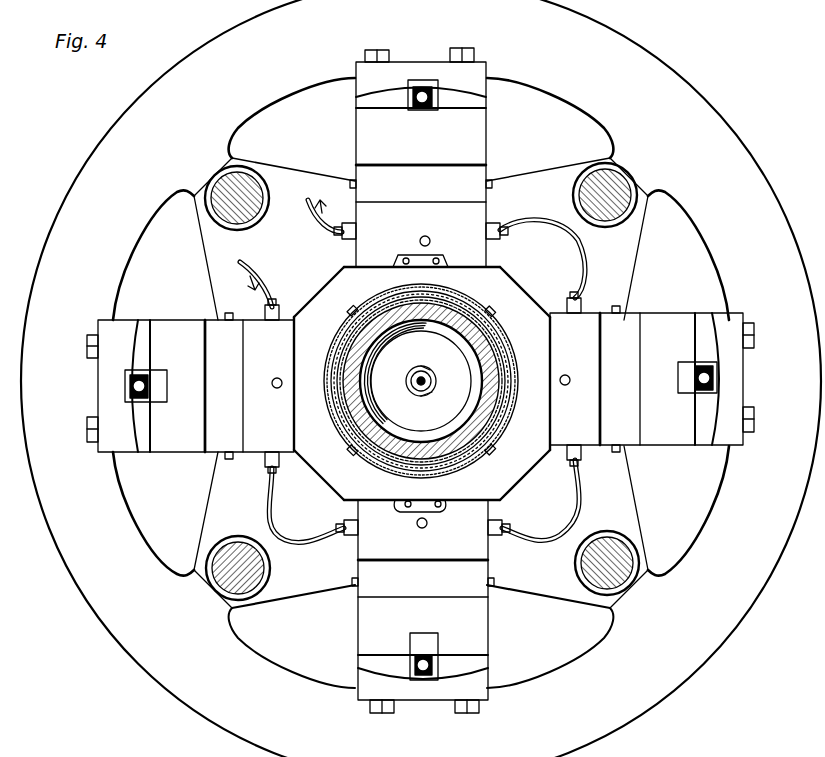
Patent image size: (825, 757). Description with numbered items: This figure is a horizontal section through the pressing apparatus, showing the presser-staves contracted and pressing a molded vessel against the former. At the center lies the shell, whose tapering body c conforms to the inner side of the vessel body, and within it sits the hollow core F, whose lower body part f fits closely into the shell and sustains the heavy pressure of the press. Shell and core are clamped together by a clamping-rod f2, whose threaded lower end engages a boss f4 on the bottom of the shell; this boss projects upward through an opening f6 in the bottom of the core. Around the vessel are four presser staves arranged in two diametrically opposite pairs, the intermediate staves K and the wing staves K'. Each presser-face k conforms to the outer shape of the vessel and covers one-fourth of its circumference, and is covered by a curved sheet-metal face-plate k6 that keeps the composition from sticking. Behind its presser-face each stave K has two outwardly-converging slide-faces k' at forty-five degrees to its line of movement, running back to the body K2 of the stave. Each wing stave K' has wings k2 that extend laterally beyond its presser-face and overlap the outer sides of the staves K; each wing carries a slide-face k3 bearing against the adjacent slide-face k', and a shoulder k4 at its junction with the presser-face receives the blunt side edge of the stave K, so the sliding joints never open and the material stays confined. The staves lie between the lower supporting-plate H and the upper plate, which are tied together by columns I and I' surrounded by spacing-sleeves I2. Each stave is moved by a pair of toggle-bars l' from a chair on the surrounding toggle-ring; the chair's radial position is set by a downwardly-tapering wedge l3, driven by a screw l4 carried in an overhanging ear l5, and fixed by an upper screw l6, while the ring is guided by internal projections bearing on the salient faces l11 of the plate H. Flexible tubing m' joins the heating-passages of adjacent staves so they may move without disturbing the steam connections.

The presser stave K is at (421, 387).
The wing stave K' is at (402, 382).
The body of the stave K2 is at (422, 362).
The presser-face k is at (420, 378).
The slide-face k' is at (420, 395).
The wing k2 is at (514, 483).
The slide-face of the wing k3 is at (468, 490).
The shoulder k4 is at (492, 314).
The face-plate k6 is at (335, 372).
The toggle-bar l' is at (420, 381).
The wedge l3 is at (486, 100).
The screw l4 is at (420, 82).
The overhanging ear l5 is at (424, 108).
The upper screw l6 is at (768, 412).
The salient face l11 is at (240, 150).
The column I is at (405, 381).
The column I' is at (443, 380).
The spacing-sleeve I2 is at (262, 190).
The lower supporting-plate H is at (645, 510).
The flexible tubing m' is at (431, 371).
The core F is at (420, 420).
The body part of the core f is at (421, 366).
The clamping-rod f2 is at (412, 390).
The boss f4 is at (432, 372).
The opening f6 is at (434, 392).
The tapering body c is at (432, 378).
The coil spring d is at (392, 383).